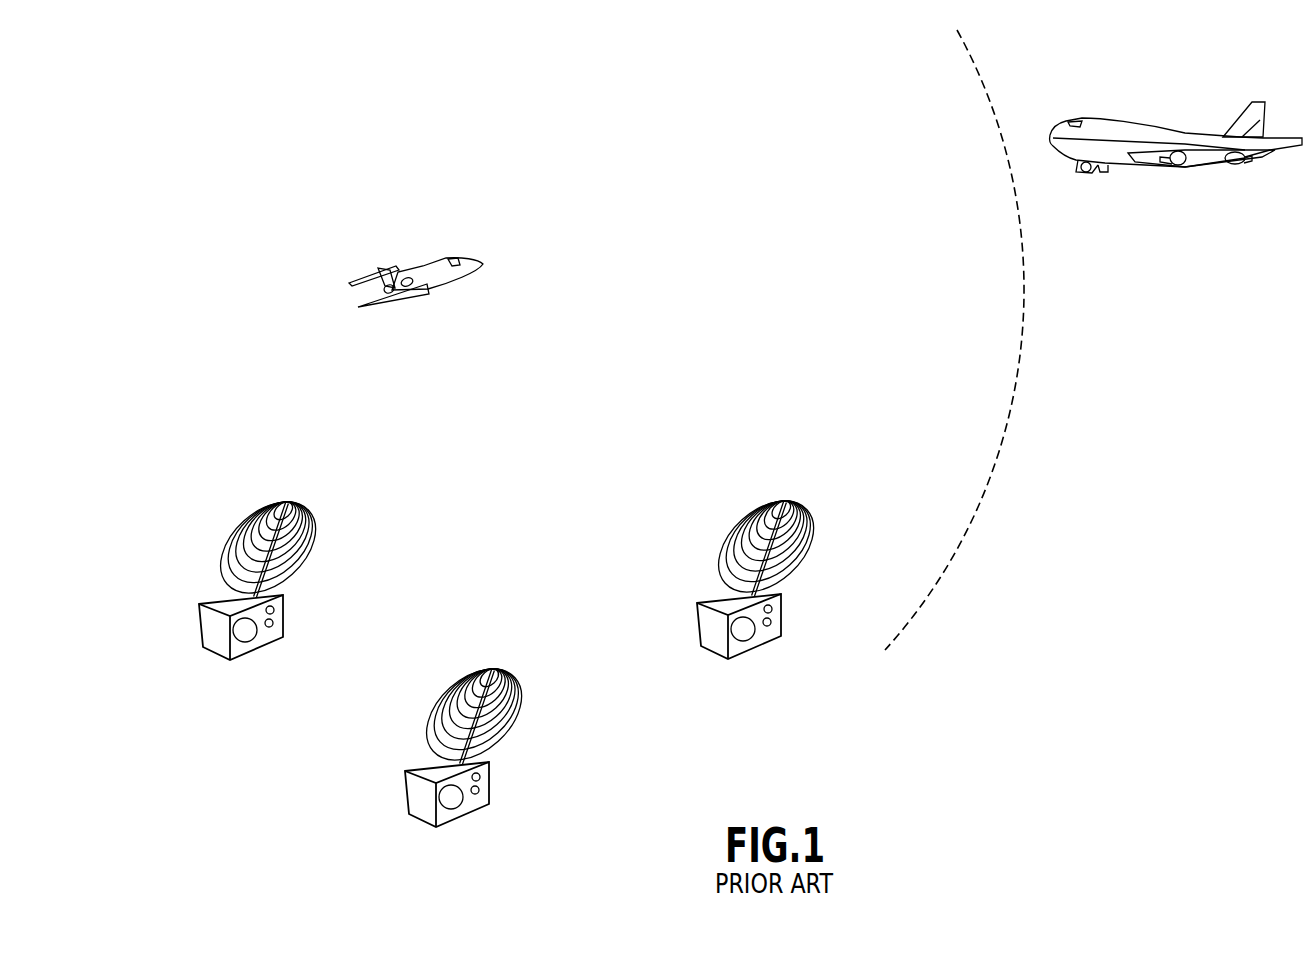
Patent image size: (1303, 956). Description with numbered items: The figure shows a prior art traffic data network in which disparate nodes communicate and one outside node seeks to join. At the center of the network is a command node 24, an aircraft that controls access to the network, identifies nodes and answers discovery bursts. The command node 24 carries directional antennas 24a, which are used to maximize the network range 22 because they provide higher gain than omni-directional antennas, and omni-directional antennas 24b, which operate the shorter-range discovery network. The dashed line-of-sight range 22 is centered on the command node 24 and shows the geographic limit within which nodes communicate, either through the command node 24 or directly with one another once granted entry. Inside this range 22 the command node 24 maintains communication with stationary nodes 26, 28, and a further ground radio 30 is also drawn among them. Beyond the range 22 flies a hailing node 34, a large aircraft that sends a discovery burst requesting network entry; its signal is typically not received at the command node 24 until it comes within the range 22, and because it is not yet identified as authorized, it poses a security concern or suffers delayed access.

The range 22 is at (1022, 317).
The command node 24 is at (453, 292).
The directional antenna 24a is at (478, 266).
The omni-directional antenna 24b is at (438, 296).
The stationary node 26 is at (216, 603).
The stationary node 28 is at (718, 598).
The radio transmitter 30 is at (423, 766).
The hailing node 34 is at (1177, 184).